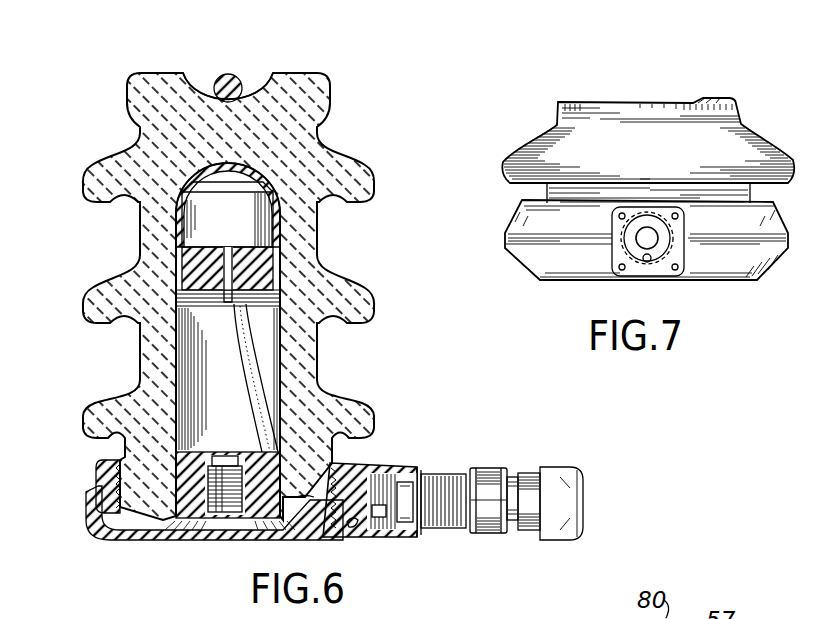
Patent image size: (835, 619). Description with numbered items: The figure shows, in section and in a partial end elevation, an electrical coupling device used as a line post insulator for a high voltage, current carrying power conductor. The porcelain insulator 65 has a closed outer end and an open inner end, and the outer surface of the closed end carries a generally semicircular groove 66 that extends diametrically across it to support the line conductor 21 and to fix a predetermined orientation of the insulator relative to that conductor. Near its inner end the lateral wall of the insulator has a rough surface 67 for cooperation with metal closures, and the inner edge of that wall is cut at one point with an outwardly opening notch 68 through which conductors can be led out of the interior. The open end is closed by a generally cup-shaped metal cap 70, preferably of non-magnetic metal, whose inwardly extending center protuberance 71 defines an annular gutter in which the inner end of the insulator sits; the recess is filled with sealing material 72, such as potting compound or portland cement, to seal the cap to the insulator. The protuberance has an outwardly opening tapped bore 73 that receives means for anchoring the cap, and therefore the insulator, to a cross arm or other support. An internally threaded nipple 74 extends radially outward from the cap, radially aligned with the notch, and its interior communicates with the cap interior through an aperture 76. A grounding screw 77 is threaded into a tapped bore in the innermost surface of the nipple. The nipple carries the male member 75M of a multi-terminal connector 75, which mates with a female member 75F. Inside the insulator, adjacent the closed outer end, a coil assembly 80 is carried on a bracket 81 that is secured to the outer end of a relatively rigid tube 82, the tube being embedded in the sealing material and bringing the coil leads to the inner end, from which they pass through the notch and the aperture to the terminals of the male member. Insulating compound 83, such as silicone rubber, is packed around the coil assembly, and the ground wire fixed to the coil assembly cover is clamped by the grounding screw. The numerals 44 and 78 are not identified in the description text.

In FIG. 6, the conductor 21 is at (233, 75).
In FIG. 6, the rod 44 is at (242, 302).
In FIG. 6, the porcelain insulator 65 is at (350, 166).
In FIG. 7, the porcelain insulator 65 is at (528, 150).
In FIG. 6, the groove 66 is at (258, 92).
In FIG. 6, the rough surface 67 is at (356, 468).
In FIG. 6, the notch 68 is at (313, 498).
In FIG. 6, the metal cap 70 is at (98, 512).
In FIG. 7, the metal cap 70 is at (534, 261).
In FIG. 6, the center protuberance 71 is at (244, 452).
In FIG. 6, the sealing material 72 is at (112, 480).
In FIG. 6, the tapped bore 73 is at (233, 510).
In FIG. 6, the internally threaded nipple 74 is at (400, 466).
In FIG. 7, the internally threaded nipple 74 is at (683, 262).
In FIG. 6, the multi-terminal connector 75 is at (498, 508).
In FIG. 6, the male member 75M is at (414, 532).
In FIG. 6, the female member 75F is at (490, 532).
In FIG. 6, the aperture 76 is at (372, 518).
In FIG. 7, the aperture 76 is at (641, 248).
In FIG. 6, the grounding screw 77 is at (385, 518).
In FIG. 6, the contact lead 78 is at (351, 528).
In FIG. 7, the contact lead 78 is at (650, 263).
In FIG. 6, the coil assembly 80 is at (220, 232).
In FIG. 6, the bracket 81 is at (242, 258).
In FIG. 6, the tube 82 is at (252, 370).
In FIG. 6, the insulating compound 83 is at (262, 273).